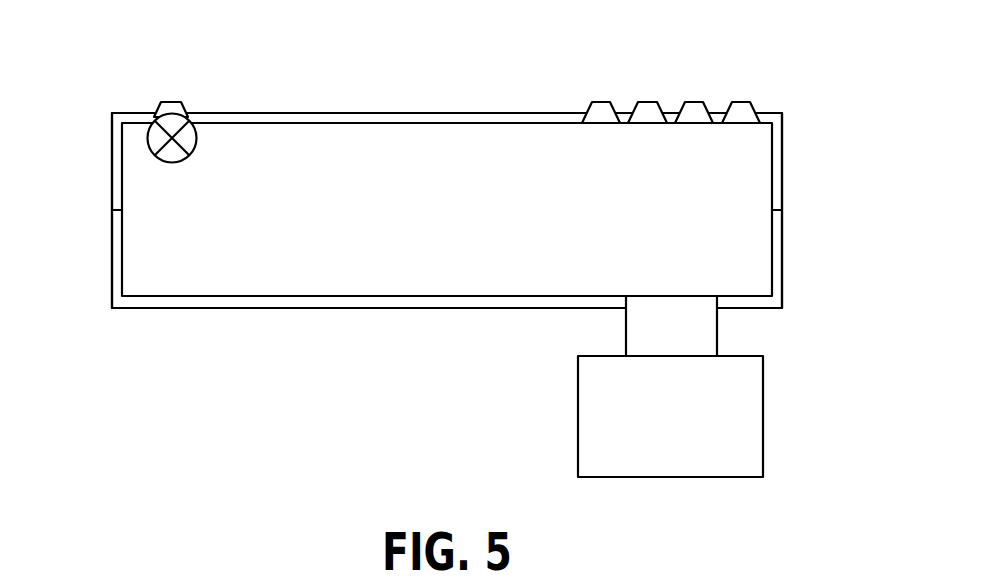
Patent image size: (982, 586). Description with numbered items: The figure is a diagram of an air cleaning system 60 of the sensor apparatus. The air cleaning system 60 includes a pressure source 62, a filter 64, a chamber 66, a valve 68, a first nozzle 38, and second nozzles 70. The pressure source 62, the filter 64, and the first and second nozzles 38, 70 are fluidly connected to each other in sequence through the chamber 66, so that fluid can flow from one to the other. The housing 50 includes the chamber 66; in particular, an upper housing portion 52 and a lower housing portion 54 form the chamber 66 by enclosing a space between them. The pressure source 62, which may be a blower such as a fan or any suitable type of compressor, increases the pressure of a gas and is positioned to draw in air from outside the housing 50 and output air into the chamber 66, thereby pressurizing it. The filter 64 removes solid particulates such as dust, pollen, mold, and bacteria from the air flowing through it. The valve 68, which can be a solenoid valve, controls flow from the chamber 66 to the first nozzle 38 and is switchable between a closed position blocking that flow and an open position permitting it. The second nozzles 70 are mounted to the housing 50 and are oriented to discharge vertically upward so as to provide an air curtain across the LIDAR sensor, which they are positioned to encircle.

The air cleaning system 60 is at (114, 70).
The first nozzle 38 is at (171, 102).
The valve 68 is at (197, 142).
The second nozzles 70 is at (741, 102).
The upper housing portion 52 is at (782, 160).
The lower housing portion 54 is at (782, 258).
The housing 50 is at (405, 308).
The chamber 66 is at (238, 252).
The filter 64 is at (717, 330).
The pressure source 62 is at (763, 415).